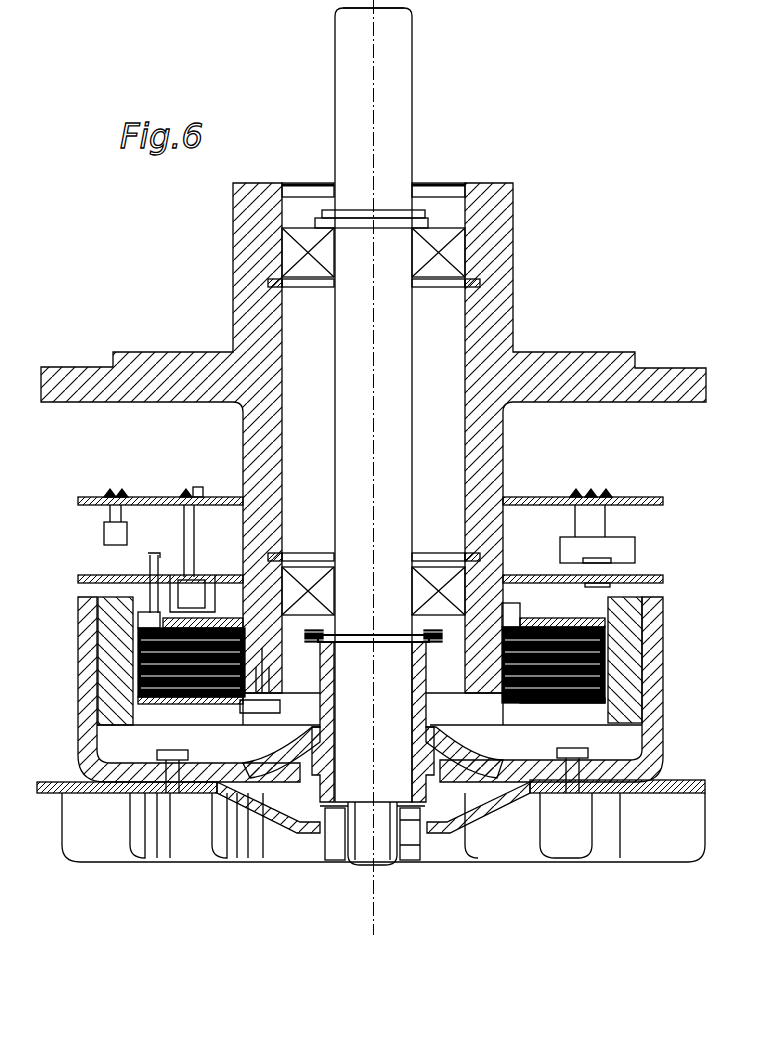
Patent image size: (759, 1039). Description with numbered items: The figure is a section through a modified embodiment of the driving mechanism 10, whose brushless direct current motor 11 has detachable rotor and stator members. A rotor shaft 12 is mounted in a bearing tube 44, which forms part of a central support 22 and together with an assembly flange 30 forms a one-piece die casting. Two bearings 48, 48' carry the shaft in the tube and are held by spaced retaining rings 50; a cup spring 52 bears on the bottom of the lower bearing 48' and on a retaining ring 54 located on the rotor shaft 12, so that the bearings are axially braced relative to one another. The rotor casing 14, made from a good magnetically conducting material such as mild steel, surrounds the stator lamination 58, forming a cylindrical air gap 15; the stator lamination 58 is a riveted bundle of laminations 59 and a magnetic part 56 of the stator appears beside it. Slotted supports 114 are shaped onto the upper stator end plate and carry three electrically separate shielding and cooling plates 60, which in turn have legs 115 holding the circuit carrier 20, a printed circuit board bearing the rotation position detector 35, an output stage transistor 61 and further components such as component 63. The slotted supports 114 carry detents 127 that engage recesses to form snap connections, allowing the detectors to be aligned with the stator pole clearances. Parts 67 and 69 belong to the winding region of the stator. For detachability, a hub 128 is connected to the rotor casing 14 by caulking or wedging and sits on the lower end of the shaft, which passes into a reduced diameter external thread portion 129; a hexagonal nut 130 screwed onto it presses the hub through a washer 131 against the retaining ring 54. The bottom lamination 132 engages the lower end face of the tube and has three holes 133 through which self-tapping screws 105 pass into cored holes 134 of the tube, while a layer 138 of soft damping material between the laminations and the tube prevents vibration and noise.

The driving mechanism 10 is at (539, 178).
The brushless direct current motor 11 is at (75, 750).
The rotor shaft 12 is at (405, 95).
The rotor casing 14 is at (650, 748).
The air gap 15 is at (612, 650).
The printed circuit board 20 is at (560, 497).
The central support 22 is at (373, 438).
The assembly flange 30 is at (585, 362).
The Hall IC 35 is at (190, 568).
The bearing tube 44 is at (243, 268).
The bearing 48 is at (373, 204).
The bearing 48' is at (373, 561).
The retaining ring 50 is at (280, 288).
The cup spring 52 is at (438, 636).
The retaining ring 54 is at (336, 637).
The yoke 56 is at (110, 660).
The stator lamination 58 is at (100, 705).
The bundle of laminations 59 is at (600, 668).
The shielding and cooling plate 60 is at (663, 579).
The output stage transistor 61 is at (618, 552).
The circuitry component 63 is at (104, 531).
The bobbin flange 67 is at (533, 623).
The bobbin bottom flange 69 is at (190, 706).
The self-tapping screw 105 is at (250, 690).
The slotted support 114 is at (165, 556).
The leg 115 is at (197, 487).
The detent 127 is at (146, 569).
The hub 128 is at (417, 800).
The external thread portion 129 is at (366, 857).
The hexagonal nut 130 is at (412, 846).
The washer 131 is at (404, 842).
The lamination 132 is at (148, 700).
The hole 133 is at (235, 860).
The cored hole 134 is at (262, 678).
The layer of damping material 138 is at (555, 700).